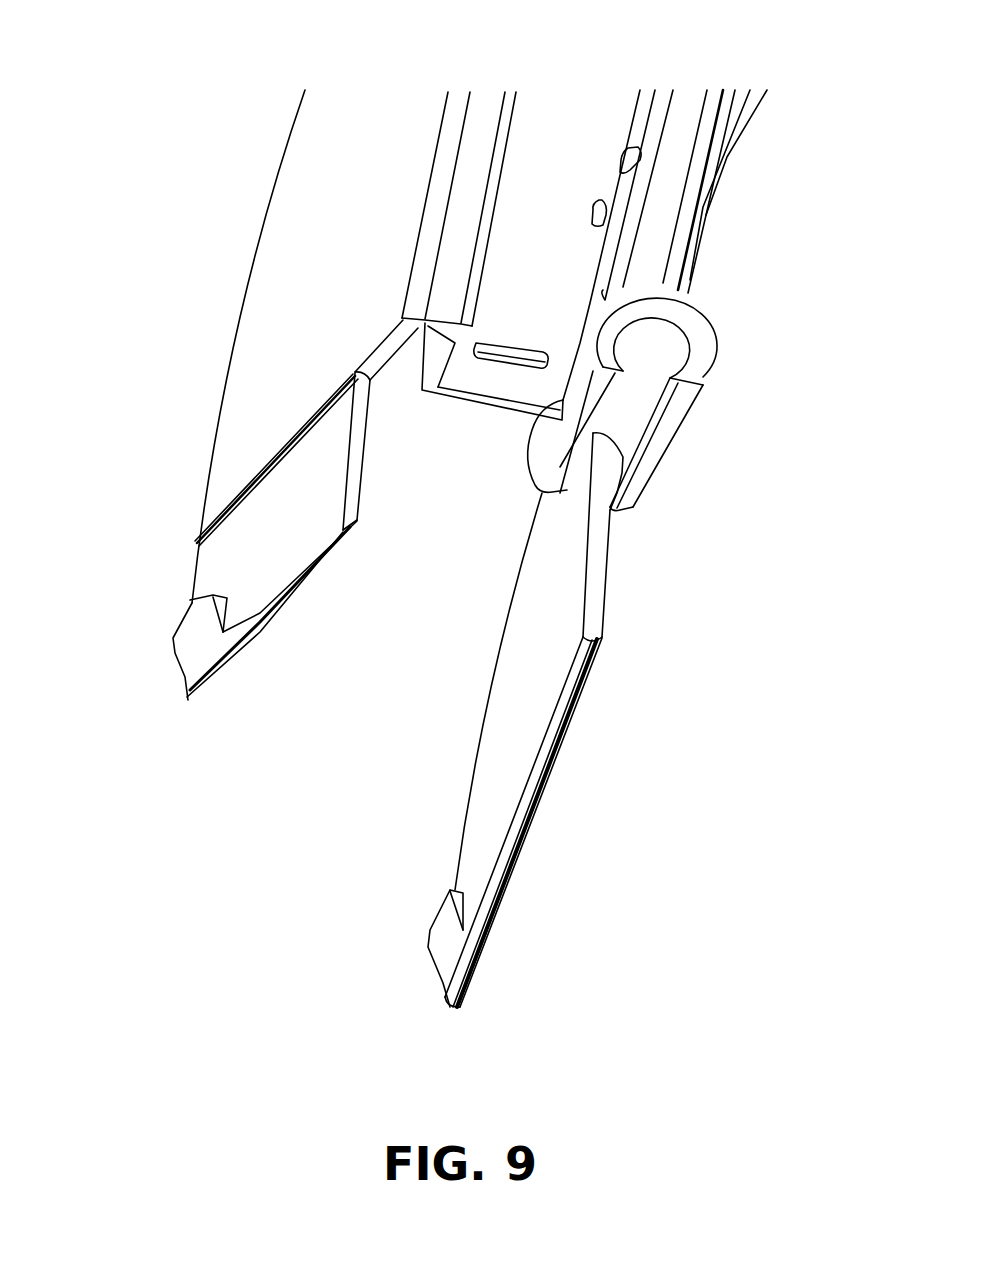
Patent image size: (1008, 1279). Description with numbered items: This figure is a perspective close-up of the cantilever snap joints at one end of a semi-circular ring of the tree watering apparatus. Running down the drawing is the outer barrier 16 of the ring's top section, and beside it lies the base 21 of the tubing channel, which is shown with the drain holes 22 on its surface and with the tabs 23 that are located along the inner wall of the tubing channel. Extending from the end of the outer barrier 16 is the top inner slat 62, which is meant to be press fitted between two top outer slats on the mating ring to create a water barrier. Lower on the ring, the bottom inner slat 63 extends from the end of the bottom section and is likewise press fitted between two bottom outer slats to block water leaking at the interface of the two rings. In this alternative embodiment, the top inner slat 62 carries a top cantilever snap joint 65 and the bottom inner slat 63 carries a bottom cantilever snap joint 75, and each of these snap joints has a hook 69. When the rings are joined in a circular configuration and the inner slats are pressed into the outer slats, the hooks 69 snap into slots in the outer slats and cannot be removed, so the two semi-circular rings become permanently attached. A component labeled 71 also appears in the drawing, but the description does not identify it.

The outer barrier 16 is at (310, 265).
The base of the tubing channel 21 is at (530, 273).
The drain holes 22 is at (595, 203).
The tabs 23 is at (642, 146).
The top inner slat 62 is at (343, 493).
The bottom inner slat 63 is at (568, 733).
The top cantilever snap joint 65 is at (202, 590).
The hook 69 is at (443, 938).
The clip 71 is at (697, 365).
The bottom cantilever snap joint 75 is at (455, 888).